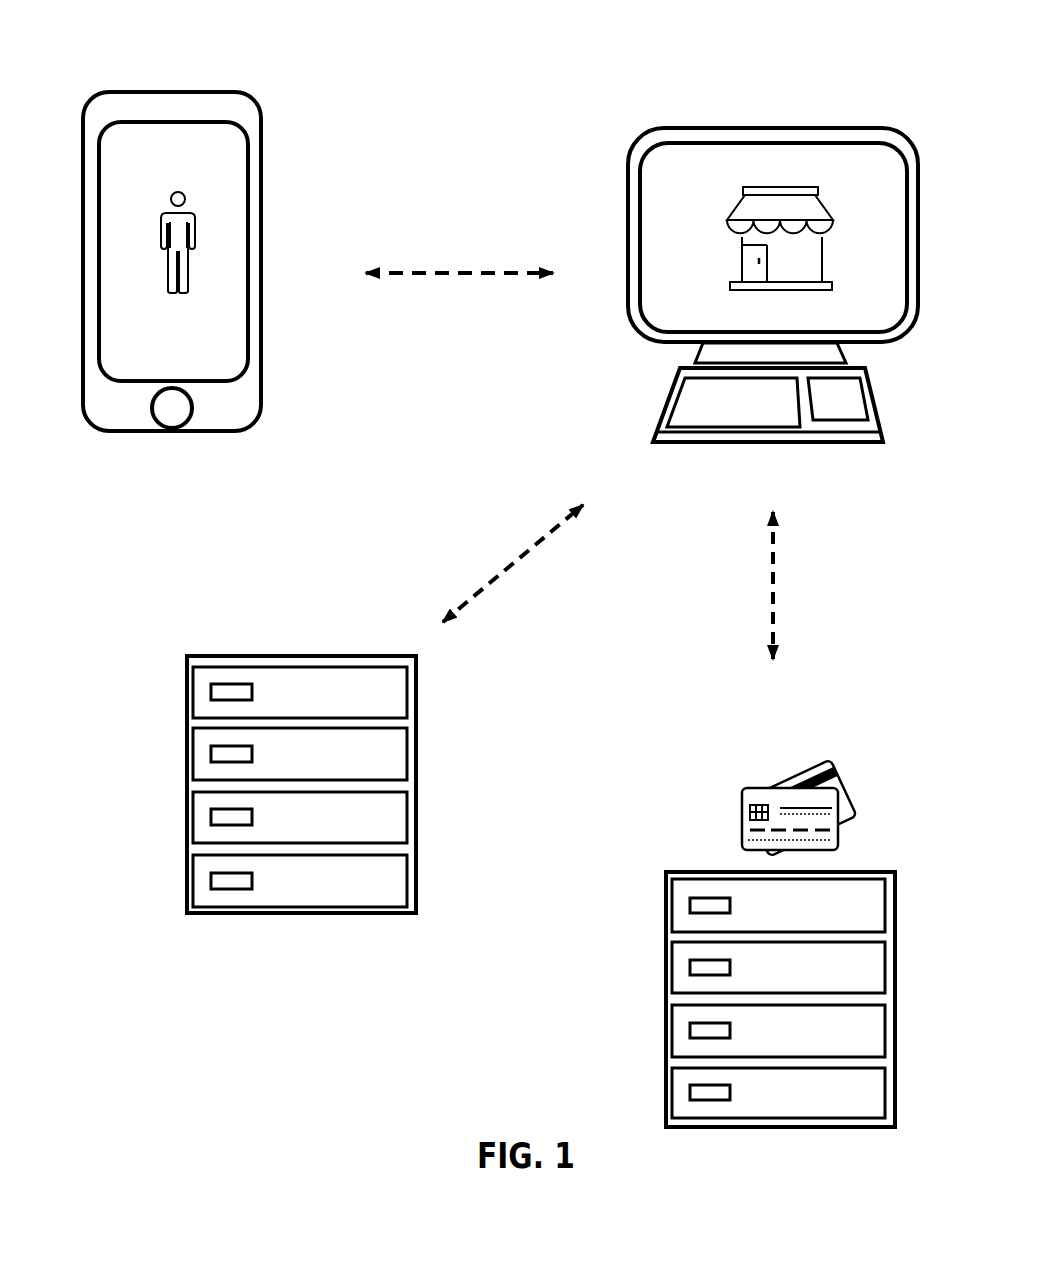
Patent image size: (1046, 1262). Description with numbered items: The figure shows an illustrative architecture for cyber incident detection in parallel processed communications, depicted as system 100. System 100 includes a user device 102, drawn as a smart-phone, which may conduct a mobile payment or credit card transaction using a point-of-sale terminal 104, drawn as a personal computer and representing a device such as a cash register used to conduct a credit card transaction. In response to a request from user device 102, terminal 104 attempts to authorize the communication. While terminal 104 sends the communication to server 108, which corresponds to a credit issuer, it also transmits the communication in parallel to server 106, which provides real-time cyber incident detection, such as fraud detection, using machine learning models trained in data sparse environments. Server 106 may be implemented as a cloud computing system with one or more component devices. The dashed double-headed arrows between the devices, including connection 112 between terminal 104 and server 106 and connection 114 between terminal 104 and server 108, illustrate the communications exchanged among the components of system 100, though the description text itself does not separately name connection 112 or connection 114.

The system 100 is at (540, 42).
The user device 102 is at (280, 396).
The terminal 104 is at (606, 321).
The server 106 is at (297, 628).
The server 108 is at (708, 838).
The network connection 112 is at (503, 524).
The network connection 114 is at (736, 568).